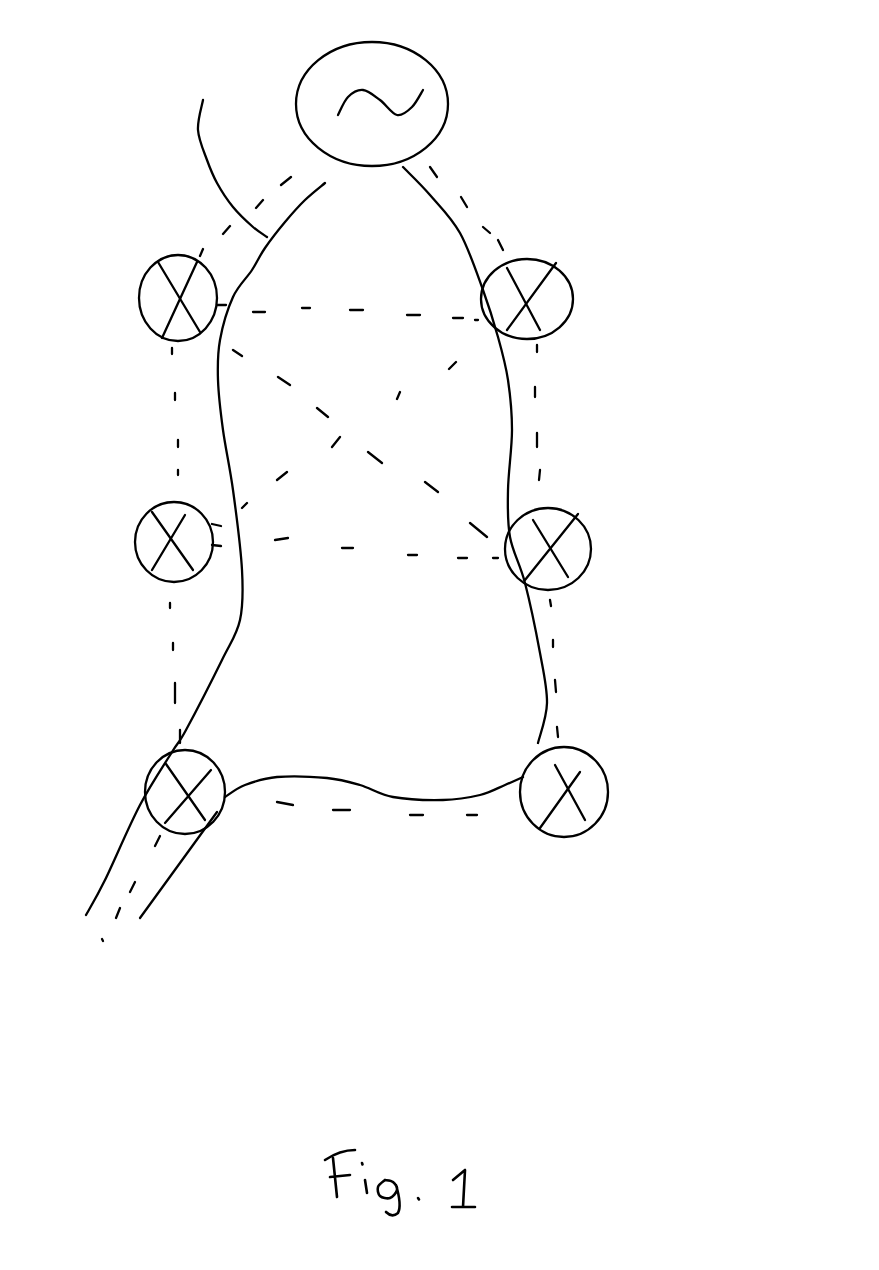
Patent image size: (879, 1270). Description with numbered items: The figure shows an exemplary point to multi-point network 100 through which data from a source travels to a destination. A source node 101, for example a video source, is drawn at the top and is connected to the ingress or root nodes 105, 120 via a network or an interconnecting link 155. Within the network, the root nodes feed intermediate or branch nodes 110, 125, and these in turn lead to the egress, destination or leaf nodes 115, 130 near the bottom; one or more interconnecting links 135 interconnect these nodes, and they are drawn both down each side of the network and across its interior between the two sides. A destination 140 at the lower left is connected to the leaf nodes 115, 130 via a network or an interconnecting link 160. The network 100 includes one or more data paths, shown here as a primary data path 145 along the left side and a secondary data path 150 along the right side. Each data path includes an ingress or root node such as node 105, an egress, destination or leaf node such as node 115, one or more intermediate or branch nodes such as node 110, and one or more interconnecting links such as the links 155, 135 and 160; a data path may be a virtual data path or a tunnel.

The point to multi-point network 100 is at (728, 993).
The source node 101 is at (513, 113).
The ingress or root node 105 is at (105, 306).
The intermediate or branch node 110 is at (108, 540).
The egress, destination or leaf node 115 is at (107, 808).
The ingress or root node 120 is at (629, 277).
The intermediate or branch node 125 is at (645, 558).
The egress, destination or leaf node 130 is at (669, 780).
The interconnecting links 135 is at (738, 384).
The destination 140 is at (146, 1008).
The primary data path 145 is at (140, 126).
The secondary data path 150 is at (472, 220).
The interconnecting link 155 is at (571, 122).
The interconnecting link 160 is at (143, 887).